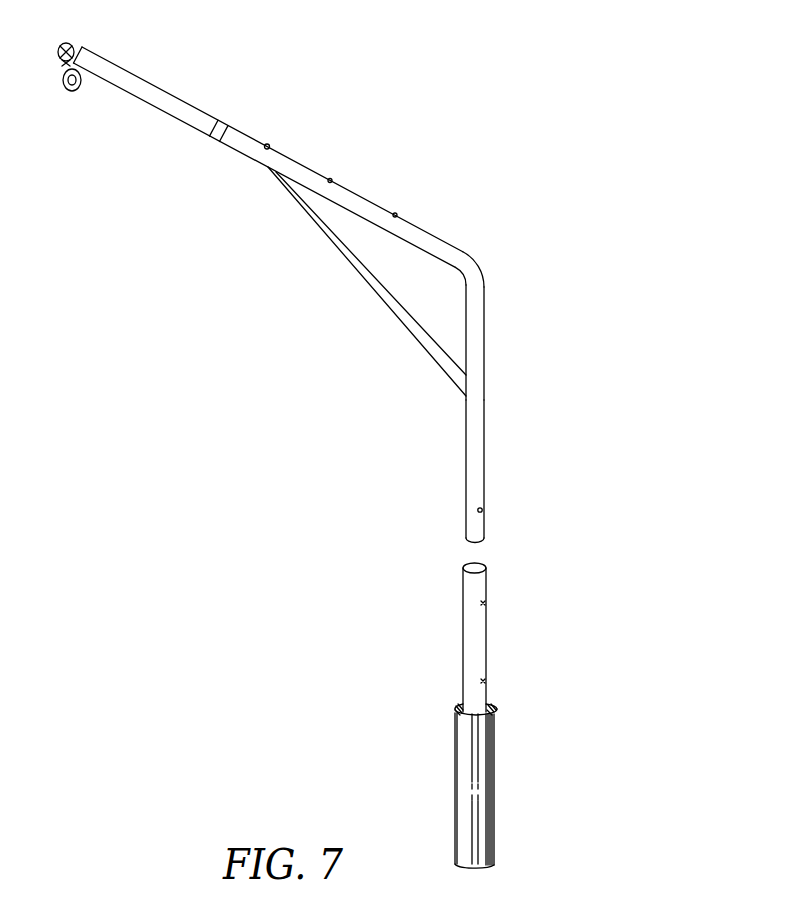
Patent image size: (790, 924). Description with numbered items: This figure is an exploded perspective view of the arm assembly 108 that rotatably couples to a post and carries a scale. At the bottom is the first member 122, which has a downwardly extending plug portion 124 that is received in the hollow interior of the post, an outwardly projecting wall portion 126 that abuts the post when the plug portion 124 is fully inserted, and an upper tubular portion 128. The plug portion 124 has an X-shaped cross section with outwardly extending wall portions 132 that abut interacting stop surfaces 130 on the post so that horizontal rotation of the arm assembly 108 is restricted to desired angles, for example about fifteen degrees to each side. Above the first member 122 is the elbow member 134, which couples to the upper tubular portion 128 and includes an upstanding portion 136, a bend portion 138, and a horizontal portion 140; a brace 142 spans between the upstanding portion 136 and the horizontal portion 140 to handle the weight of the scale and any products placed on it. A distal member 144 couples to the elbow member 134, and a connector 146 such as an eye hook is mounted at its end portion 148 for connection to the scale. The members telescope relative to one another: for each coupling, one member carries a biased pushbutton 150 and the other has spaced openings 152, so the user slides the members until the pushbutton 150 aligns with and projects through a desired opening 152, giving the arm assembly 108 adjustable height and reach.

The arm assembly 108 is at (496, 202).
The first member 122 is at (469, 634).
The plug portion 124 is at (470, 801).
The outwardly projecting wall portion 126 is at (497, 713).
The upper tubular portion 128 is at (486, 581).
The stop surfaces 130 is at (488, 796).
The outwardly extending wall portions 132 is at (488, 865).
The elbow member 134 is at (484, 322).
The upstanding portion 136 is at (484, 457).
The bend portion 138 is at (478, 275).
The horizontal portion 140 is at (357, 194).
The brace 142 is at (385, 303).
The distal member 144 is at (192, 107).
The connector 146 is at (73, 93).
The end portion 148 is at (87, 53).
The biased pushbuttons 150 is at (267, 146).
The spaced openings 152 is at (330, 181).